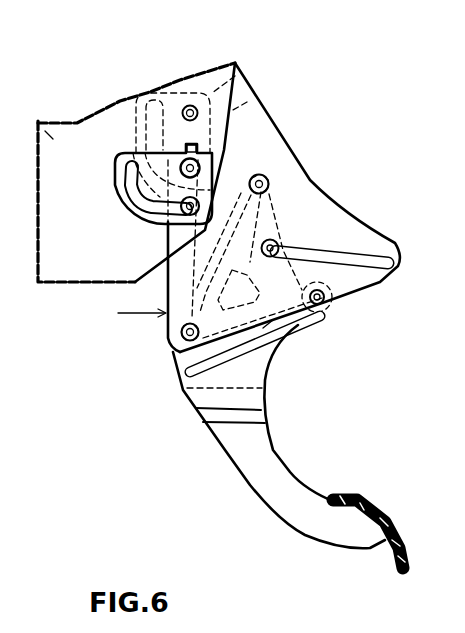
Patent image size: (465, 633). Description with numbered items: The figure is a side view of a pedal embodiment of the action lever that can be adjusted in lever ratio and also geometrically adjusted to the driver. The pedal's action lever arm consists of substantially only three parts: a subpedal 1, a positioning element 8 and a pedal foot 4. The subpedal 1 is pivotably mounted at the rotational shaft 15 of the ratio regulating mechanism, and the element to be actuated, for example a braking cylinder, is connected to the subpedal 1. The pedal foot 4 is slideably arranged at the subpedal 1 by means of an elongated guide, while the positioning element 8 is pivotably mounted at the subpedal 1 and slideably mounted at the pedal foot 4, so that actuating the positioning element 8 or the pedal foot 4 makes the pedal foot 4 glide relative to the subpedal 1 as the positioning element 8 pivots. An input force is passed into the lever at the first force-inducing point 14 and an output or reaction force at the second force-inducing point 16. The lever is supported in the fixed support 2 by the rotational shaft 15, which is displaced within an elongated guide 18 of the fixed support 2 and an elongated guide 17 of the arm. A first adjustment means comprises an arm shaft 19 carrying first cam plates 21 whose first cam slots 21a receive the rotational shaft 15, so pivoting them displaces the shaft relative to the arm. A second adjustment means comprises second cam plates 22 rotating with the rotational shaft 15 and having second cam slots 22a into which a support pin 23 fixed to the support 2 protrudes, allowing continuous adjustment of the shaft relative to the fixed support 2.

The subpedal 1 is at (322, 203).
The fixed support 2 is at (38, 121).
The pedal foot 4 is at (258, 483).
The positioning element 8 is at (268, 325).
The first force-inducing point 14 is at (420, 478).
The rotational shaft 15 is at (200, 167).
The second force-inducing point 16 is at (163, 318).
The elongated guide of the arm 17 is at (247, 102).
The elongated guide of the fixed support 18 is at (200, 138).
The arm shaft 19 is at (222, 118).
The first cam plates 21 is at (130, 92).
The first cam slots 21a is at (157, 78).
The second cam plates 22 is at (116, 187).
The second cam slots 22a is at (130, 202).
The support pin 23 is at (184, 220).